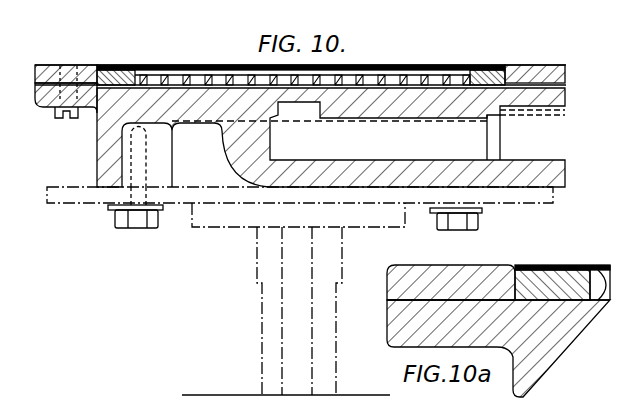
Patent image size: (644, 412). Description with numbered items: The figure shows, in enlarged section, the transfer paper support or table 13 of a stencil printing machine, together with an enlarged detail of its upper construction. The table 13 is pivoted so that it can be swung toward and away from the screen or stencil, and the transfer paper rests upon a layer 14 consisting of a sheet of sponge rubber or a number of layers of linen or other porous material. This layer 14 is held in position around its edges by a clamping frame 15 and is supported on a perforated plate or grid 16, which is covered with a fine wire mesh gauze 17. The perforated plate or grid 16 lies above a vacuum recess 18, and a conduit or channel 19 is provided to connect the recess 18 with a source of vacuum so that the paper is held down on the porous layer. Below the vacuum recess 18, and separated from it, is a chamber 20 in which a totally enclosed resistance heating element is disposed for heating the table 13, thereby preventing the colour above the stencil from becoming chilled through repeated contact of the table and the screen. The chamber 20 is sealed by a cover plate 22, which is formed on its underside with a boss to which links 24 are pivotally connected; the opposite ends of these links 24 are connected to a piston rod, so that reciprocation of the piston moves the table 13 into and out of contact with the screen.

In FIG. 10, the table 13 is at (97, 141).
In FIG. 10, the layer 14 is at (152, 70).
In FIG. 10a, the layer 14 is at (522, 270).
In FIG. 10, the clamping frame 15 is at (49, 66).
In FIG. 10a, the clamping frame 15 is at (442, 283).
In FIG. 10, the perforated plate or grid 16 is at (218, 73).
In FIG. 10a, the perforated plate or grid 16 is at (552, 285).
In FIG. 10, the fine wire mesh gauze 17 is at (123, 70).
In FIG. 10a, the fine wire mesh gauze 17 is at (592, 312).
In FIG. 10, the vacuum recess 18 is at (430, 92).
In FIG. 10, the conduit or channel 19 is at (382, 138).
In FIG. 10, the chamber 20 is at (204, 168).
In FIG. 10, the cover plate 22 is at (65, 197).
In FIG. 10, the links 24 is at (324, 340).